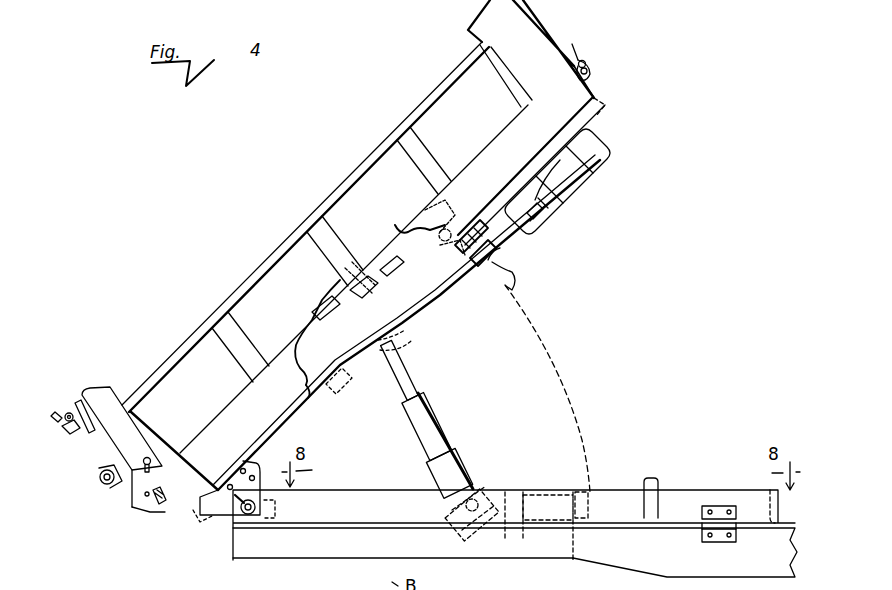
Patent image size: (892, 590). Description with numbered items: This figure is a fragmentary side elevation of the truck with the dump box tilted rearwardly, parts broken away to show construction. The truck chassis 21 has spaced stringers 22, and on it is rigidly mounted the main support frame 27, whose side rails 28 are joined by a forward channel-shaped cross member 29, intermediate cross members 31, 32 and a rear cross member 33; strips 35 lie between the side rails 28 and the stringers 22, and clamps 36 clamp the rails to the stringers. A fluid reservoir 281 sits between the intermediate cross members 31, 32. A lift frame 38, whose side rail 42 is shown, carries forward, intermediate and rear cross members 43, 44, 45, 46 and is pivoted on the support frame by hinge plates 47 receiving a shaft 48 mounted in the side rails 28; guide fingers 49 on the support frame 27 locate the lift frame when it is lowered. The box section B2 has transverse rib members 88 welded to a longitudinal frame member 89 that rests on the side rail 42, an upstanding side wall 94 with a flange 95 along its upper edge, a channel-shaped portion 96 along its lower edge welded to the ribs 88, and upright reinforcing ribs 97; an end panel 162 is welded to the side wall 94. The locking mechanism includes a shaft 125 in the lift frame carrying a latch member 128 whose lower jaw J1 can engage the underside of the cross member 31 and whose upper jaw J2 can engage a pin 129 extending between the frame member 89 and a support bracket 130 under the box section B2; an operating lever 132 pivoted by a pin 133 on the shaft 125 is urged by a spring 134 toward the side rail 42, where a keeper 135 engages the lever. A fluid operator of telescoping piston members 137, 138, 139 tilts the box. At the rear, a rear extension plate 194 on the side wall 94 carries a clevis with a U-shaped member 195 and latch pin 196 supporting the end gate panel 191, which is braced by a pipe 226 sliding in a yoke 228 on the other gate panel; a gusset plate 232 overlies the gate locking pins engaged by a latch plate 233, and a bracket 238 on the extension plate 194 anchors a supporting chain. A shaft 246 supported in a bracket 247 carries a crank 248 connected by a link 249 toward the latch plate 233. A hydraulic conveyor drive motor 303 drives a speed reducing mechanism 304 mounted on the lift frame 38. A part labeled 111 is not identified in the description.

The chassis 21 is at (300, 560).
The stringers 22 is at (342, 530).
The main support frame 27 is at (690, 492).
The side rails 28 is at (715, 500).
The forward channel-shaped cross member 29 is at (775, 516).
The intermediate cross member 31 is at (590, 494).
The intermediate cross member 32 is at (515, 490).
The rear cross member 33 is at (280, 508).
The strips 35 is at (624, 520).
The clamps 36 is at (705, 540).
The lift frame 38 is at (426, 305).
The side rail 42 is at (440, 318).
The forward cross member 43 is at (616, 112).
The intermediate cross member 44 is at (450, 262).
The intermediate cross member 45 is at (345, 390).
The rear cross member 46 is at (195, 522).
The hinge plates 47 is at (228, 515).
The shaft 48 is at (244, 518).
The guide fingers 49 is at (656, 478).
The rib members 88 is at (312, 302).
The frame member 89 is at (300, 372).
The side wall 94 is at (436, 110).
The flange 95 is at (372, 150).
The channel-shaped portion 96 is at (509, 120).
The upright reinforcing ribs 97 is at (428, 160).
The cylinder rod 111 is at (462, 462).
The shaft 125 is at (476, 225).
The latch member 128 is at (500, 250).
The pin 129 is at (440, 258).
The support bracket 130 is at (430, 205).
The operating lever 132 is at (520, 187).
The pin 133 is at (493, 258).
The spring 134 is at (478, 268).
The keeper 135 is at (495, 200).
The piston member 137 is at (432, 428).
The piston member 138 is at (408, 380).
The piston member 139 is at (418, 338).
The end panel 162 is at (476, 22).
The rear end gate panel 191 is at (98, 450).
The rear extension plate 194 is at (100, 390).
The U-shaped member 195 is at (70, 420).
The latch pin 196 is at (52, 415).
The pipe 226 is at (108, 486).
The yoke 228 is at (100, 476).
The gusset plate 232 is at (132, 500).
The latch plate 233 is at (150, 512).
The bracket 238 is at (90, 430).
The second shaft 246 is at (592, 78).
The bracket 247 is at (572, 40).
The crank 248 is at (595, 68).
The link 249 is at (586, 60).
The fluid reservoir 281 is at (553, 492).
The hydraulic conveyor drive motor 303 is at (515, 238).
The speed reducing mechanism 304 is at (590, 168).
The box section B2 is at (309, 190).
The lower jaw portion J1 is at (515, 278).
The upper jaw member J2 is at (462, 210).